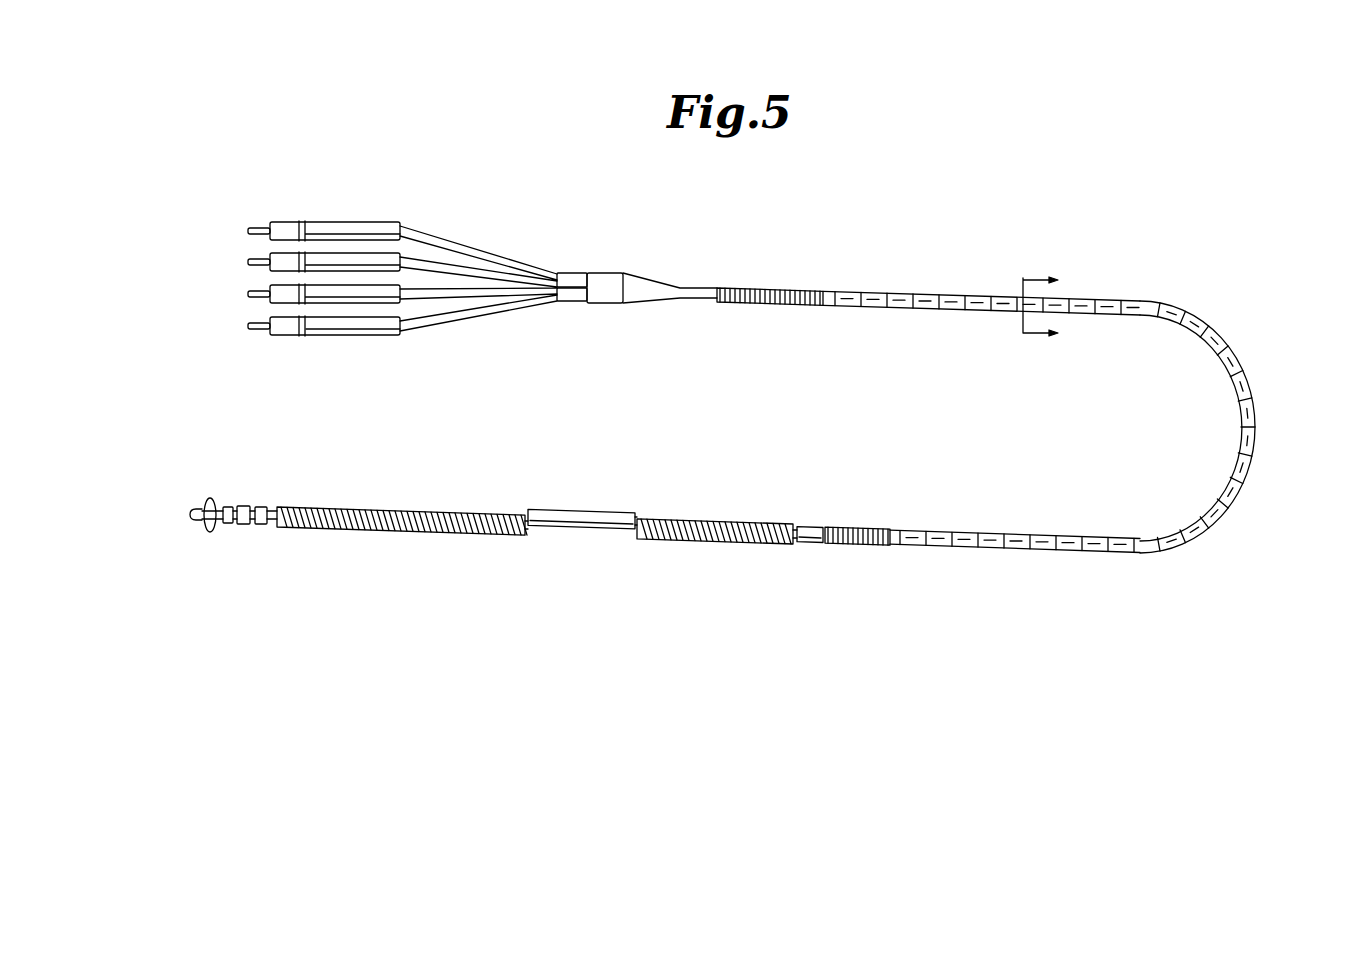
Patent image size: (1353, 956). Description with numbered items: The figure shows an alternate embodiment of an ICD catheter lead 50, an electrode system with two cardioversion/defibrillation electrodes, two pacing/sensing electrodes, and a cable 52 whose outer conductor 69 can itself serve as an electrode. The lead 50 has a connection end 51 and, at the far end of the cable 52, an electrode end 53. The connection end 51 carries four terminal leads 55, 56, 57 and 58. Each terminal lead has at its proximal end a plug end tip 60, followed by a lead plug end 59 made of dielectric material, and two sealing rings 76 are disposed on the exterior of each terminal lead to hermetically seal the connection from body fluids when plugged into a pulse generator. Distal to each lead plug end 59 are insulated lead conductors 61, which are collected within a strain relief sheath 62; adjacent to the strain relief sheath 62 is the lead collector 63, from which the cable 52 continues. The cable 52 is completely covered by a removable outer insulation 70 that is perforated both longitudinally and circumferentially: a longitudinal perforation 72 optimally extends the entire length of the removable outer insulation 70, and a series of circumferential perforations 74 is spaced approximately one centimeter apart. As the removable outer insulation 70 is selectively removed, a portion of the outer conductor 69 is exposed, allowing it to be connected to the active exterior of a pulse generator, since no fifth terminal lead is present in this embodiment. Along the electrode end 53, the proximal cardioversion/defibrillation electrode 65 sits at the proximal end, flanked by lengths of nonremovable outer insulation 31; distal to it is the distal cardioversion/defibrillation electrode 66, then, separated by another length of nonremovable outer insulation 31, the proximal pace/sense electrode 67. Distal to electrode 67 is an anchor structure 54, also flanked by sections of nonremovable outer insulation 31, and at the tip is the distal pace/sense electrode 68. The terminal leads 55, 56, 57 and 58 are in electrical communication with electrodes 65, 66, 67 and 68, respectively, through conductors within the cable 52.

The nonremovable outer insulation 31 is at (263, 505).
The lead 50 is at (1114, 275).
The connection end 51 is at (276, 183).
The cable 52 is at (1229, 339).
The electrode end 53 is at (617, 566).
The anchor structure 54 is at (200, 491).
The terminal lead 55 is at (371, 218).
The terminal lead 56 is at (240, 260).
The terminal lead 57 is at (240, 293).
The terminal lead 58 is at (371, 340).
The lead plug end 59 is at (398, 232).
The plug end tip 60 is at (248, 229).
The insulated lead conductors 61 is at (476, 250).
The strain relief sheath 62 is at (580, 275).
The lead collector 63 is at (656, 282).
The proximal cardioversion/defibrillation electrode 65 is at (707, 518).
The distal cardioversion/defibrillation electrode 66 is at (401, 506).
The proximal pace/sense electrode 67 is at (243, 524).
The distal pace/sense electrode 68 is at (190, 512).
The outer conductor 69 is at (777, 288).
The removable outer insulation 70 is at (1177, 544).
The longitudinal perforation 72 is at (1237, 492).
The circumferential perforations 74 is at (1250, 470).
The sealing rings 76 is at (300, 336).